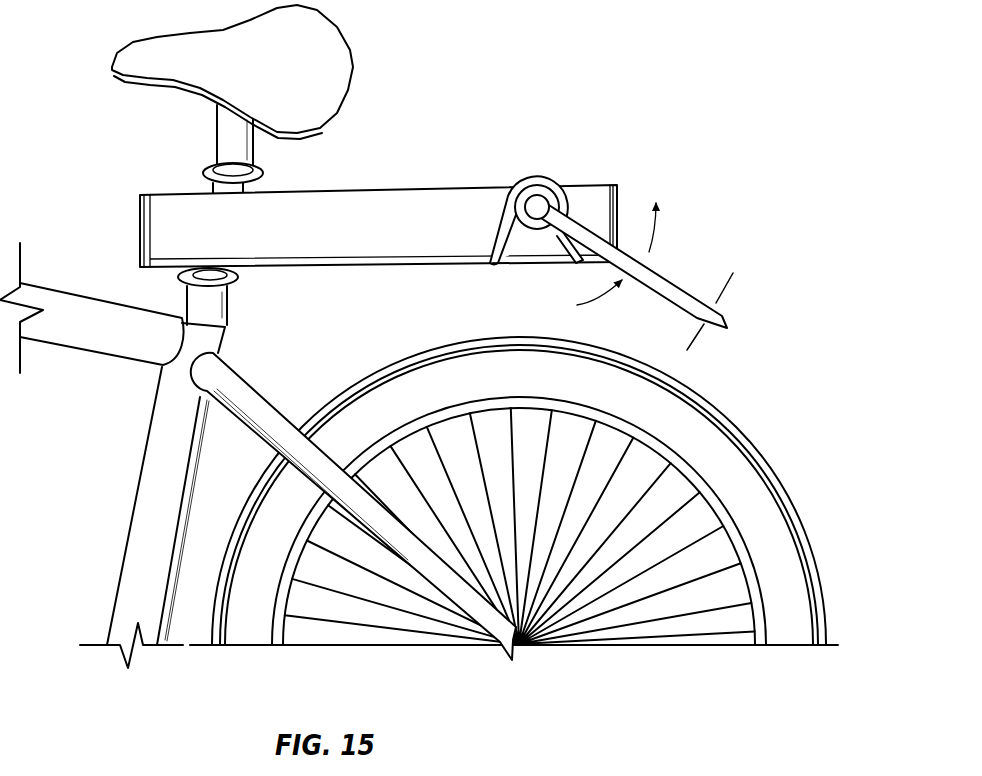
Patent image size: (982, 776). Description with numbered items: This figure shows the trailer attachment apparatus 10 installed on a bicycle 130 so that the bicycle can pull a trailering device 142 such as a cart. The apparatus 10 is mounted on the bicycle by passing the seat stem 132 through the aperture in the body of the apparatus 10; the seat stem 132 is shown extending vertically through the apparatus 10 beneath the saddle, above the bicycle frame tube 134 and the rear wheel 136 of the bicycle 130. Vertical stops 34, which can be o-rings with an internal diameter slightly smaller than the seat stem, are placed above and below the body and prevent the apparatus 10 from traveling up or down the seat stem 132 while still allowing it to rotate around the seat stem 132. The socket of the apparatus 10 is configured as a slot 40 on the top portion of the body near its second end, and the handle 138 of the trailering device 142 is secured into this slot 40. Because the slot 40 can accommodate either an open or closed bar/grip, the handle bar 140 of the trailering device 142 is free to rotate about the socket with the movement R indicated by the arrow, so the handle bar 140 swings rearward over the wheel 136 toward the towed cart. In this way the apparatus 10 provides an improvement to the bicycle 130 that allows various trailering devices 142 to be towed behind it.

The apparatus 10 is at (452, 88).
The vertical stop 34 is at (203, 173).
The slot 40 is at (523, 233).
The bicycle 130 is at (119, 250).
The seat stem 132 is at (217, 147).
The top tube 134 is at (128, 362).
The rear wheel 136 is at (573, 347).
The handle 138 is at (540, 181).
The handle bar 140 is at (668, 280).
The trailering device 142 is at (722, 135).